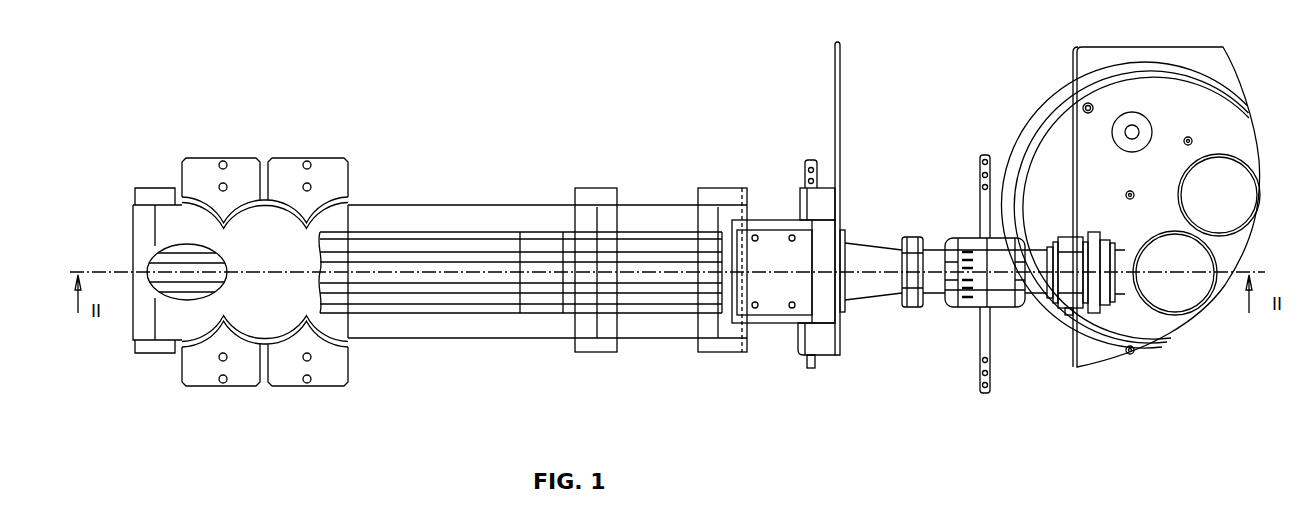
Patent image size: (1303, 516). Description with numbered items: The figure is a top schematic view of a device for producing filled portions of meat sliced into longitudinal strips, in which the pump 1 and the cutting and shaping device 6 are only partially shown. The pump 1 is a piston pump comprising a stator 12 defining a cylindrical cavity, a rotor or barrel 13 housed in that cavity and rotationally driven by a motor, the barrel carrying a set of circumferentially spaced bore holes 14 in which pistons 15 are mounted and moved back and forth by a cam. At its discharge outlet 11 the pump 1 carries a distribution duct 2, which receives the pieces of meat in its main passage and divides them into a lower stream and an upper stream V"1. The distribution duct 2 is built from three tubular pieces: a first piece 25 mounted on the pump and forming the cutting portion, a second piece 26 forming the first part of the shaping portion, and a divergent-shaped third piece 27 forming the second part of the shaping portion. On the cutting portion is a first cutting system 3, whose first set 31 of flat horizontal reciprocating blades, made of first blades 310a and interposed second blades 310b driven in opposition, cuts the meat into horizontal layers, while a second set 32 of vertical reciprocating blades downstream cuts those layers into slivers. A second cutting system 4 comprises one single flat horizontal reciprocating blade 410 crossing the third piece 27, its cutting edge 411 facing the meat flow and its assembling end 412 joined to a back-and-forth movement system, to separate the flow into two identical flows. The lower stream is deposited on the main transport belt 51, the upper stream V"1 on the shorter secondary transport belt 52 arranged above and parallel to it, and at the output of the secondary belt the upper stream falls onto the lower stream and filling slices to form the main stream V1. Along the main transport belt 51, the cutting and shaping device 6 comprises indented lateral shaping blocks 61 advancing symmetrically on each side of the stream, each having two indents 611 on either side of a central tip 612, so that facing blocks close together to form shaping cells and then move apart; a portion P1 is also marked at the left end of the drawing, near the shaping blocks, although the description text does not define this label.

The pump 1 is at (1152, 202).
The discharge outlet 11 is at (1062, 246).
The stator 12 is at (1247, 120).
The rotor or barrel 13 is at (1160, 325).
The bore holes 14 is at (1258, 176).
The pistons 15 is at (1187, 290).
The distribution duct 2 is at (880, 245).
The first piece 25 is at (1023, 298).
The second piece 26 is at (878, 292).
The third piece 27 is at (770, 228).
The first cutting system 3 is at (989, 260).
The first set of flat reciprocating blades 31 is at (1021, 246).
The first blades 310a is at (992, 182).
The second blades 310b is at (992, 377).
The second set of reciprocating blades 32 is at (965, 250).
The second cutting system 4 is at (823, 230).
The flat horizontal reciprocating blade 410 is at (809, 370).
The cutting edge 411 is at (817, 363).
The assembling end 412 is at (811, 160).
The main transport belt 51 is at (482, 330).
The secondary transport belt 52 is at (684, 212).
The cutting and shaping device 6 is at (219, 247).
The lateral shaping blocks 61 is at (200, 172).
The indents 611 is at (284, 212).
The central tip 612 is at (220, 228).
The pipe P1 is at (170, 292).
The main continuous stream of slivered and filled meat V1 is at (425, 233).